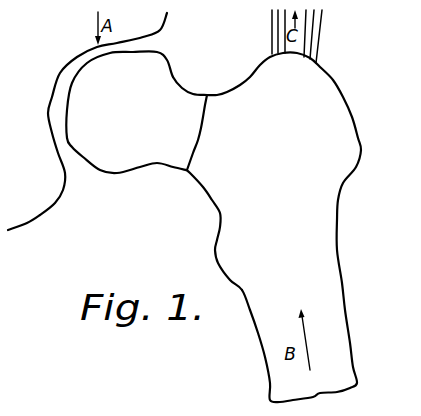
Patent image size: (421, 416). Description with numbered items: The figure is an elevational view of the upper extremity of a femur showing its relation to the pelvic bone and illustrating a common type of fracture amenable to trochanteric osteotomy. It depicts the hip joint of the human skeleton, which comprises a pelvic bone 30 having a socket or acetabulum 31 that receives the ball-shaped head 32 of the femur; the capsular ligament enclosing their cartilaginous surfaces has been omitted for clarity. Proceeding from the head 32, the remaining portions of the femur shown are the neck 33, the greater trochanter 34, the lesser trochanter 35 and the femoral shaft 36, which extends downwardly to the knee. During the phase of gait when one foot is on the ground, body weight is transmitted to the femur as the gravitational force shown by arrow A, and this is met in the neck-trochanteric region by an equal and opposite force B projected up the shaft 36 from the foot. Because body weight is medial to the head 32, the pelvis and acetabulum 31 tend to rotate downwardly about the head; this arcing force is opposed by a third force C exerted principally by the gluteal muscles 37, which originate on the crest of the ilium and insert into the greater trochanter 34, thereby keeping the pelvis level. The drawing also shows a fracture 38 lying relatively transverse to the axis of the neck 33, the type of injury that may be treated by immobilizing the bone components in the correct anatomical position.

The pelvic bone 30 is at (34, 213).
The acetabulum 31 is at (56, 119).
The head 32 is at (105, 157).
The neck 33 is at (190, 100).
The greater trochanter 34 is at (310, 87).
The lesser trochanter 35 is at (222, 210).
The femoral shaft 36 is at (338, 338).
The gluteal muscles 37 is at (322, 32).
The fracture 38 is at (207, 123).